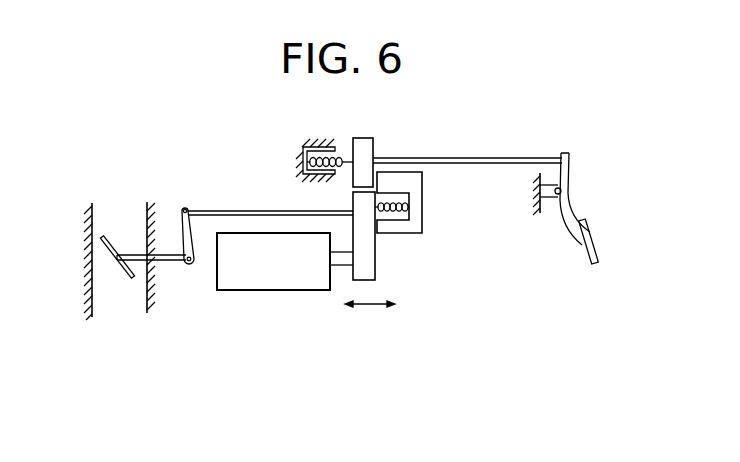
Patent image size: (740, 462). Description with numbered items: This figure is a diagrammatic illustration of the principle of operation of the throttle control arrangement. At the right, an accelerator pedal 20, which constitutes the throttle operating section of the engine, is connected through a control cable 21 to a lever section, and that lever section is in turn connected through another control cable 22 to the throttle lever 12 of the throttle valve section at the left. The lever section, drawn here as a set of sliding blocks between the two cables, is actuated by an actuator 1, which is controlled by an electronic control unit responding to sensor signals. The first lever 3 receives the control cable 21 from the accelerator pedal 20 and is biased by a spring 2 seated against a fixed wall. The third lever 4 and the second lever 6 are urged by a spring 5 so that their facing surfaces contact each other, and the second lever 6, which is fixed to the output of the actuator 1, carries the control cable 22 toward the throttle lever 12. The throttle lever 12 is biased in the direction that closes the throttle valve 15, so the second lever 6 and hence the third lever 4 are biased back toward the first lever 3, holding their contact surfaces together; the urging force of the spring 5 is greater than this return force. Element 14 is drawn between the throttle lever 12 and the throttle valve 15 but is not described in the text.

The actuator 1 is at (223, 290).
The spring 2 is at (344, 156).
The first lever 3 is at (364, 138).
The third lever 4 is at (417, 185).
The spring 5 is at (402, 212).
The second lever 6 is at (370, 267).
The throttle lever 12 is at (182, 223).
The rod 14 is at (173, 264).
The throttle valve 15 is at (120, 270).
The accelerator pedal 20 is at (568, 172).
The control cable 21 is at (457, 158).
The control cable 22 is at (277, 210).